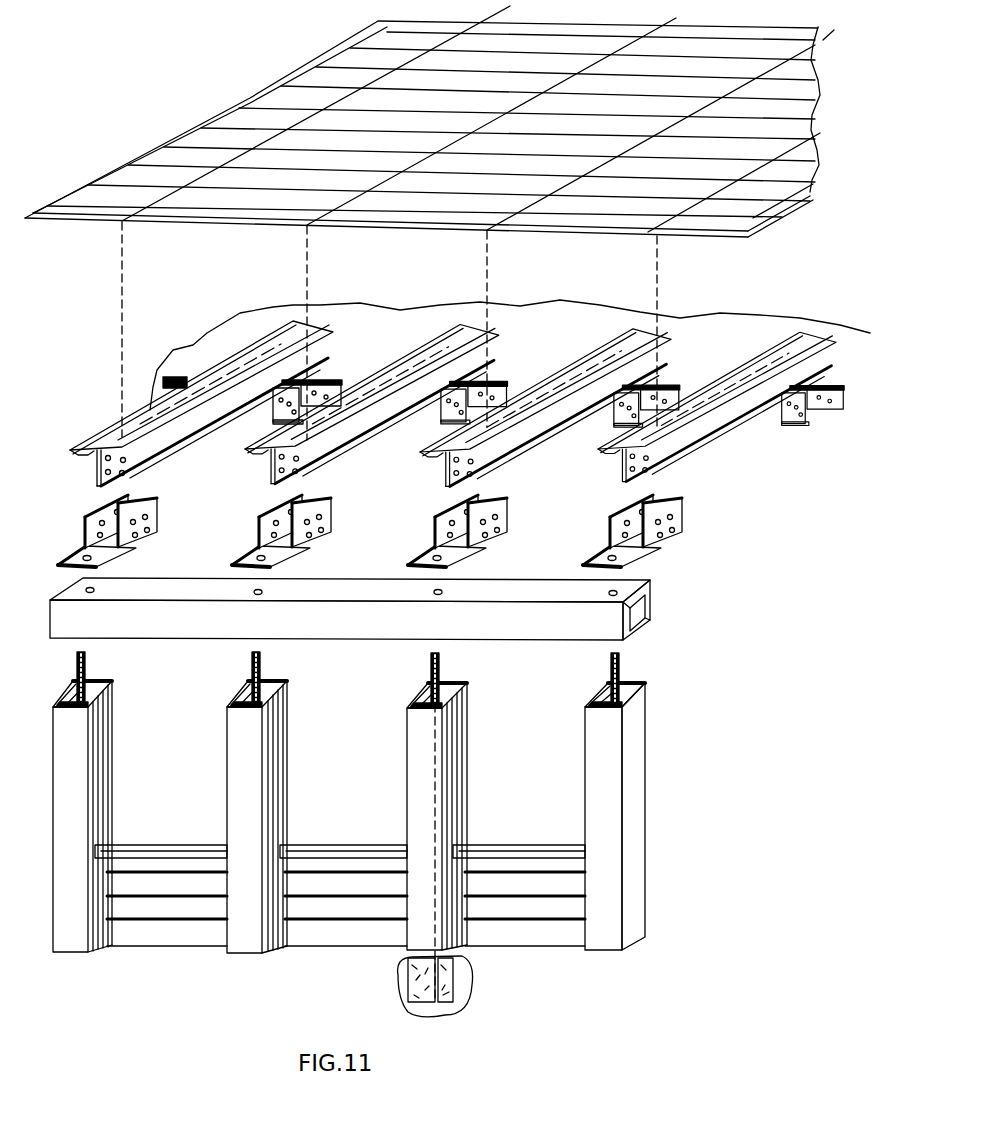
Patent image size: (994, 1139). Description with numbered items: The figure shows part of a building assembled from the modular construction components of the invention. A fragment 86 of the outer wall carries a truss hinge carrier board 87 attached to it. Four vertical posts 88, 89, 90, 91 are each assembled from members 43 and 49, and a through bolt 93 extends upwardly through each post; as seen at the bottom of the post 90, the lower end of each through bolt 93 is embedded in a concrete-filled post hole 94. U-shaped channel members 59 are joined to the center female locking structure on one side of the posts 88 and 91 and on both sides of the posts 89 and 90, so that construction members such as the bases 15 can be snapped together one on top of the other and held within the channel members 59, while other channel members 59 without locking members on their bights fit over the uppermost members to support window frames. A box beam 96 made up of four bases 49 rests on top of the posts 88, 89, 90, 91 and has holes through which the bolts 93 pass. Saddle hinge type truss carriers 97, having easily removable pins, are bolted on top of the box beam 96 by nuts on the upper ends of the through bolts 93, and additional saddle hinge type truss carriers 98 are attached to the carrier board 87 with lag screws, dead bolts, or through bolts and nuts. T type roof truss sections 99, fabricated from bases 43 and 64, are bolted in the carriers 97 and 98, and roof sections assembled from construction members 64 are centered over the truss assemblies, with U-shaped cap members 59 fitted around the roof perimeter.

The base 15 is at (312, 918).
The member 43 is at (137, 450).
The base 49 is at (632, 636).
The U-shaped channel member 59 is at (340, 883).
The construction member 64 is at (283, 96).
The fragment of the outer wall 86 is at (240, 320).
The truss hinge carrier board 87 is at (164, 378).
The vertical post 88 is at (72, 953).
The vertical post 89 is at (248, 953).
The vertical post 90 is at (458, 958).
The vertical post 91 is at (627, 943).
The through bolt 93 is at (86, 668).
The concrete-filled post hole 94 is at (398, 982).
The box beam 96 is at (508, 645).
The saddle hinge type truss carrier 97 is at (158, 515).
The saddle hinge type truss carrier 98 is at (343, 383).
The T type roof truss section 99 is at (105, 427).